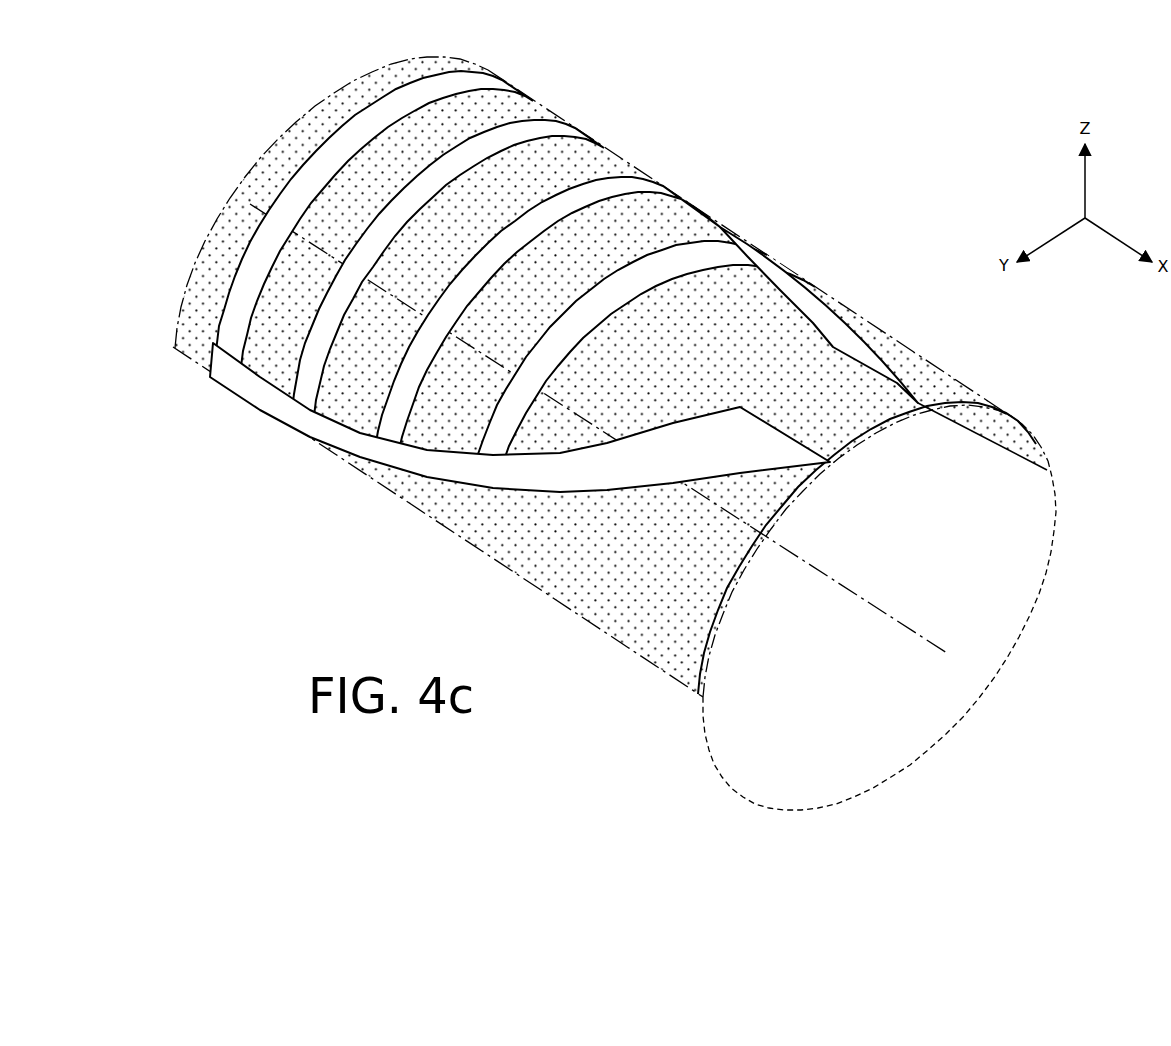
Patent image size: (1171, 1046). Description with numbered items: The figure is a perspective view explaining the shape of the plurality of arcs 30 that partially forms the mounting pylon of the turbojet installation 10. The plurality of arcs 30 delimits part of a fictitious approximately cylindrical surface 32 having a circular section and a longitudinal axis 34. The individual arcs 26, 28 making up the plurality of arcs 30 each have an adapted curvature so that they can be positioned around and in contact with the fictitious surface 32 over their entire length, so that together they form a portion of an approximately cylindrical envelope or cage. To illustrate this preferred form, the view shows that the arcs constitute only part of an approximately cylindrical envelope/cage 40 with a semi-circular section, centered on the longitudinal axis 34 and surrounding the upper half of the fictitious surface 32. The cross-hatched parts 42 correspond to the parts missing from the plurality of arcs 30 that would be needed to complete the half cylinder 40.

The electrode device 10 is at (611, 379).
The arcs 26 is at (224, 341).
The arcs 28 is at (204, 459).
The plurality of arcs 30 is at (515, 327).
The fictitious approximately cylindrical surface 32 is at (642, 120).
The longitudinal axis 34 is at (926, 640).
The approximately cylindrical envelope/cage 40 is at (843, 307).
The parts shown cross-hatched 42 is at (742, 332).